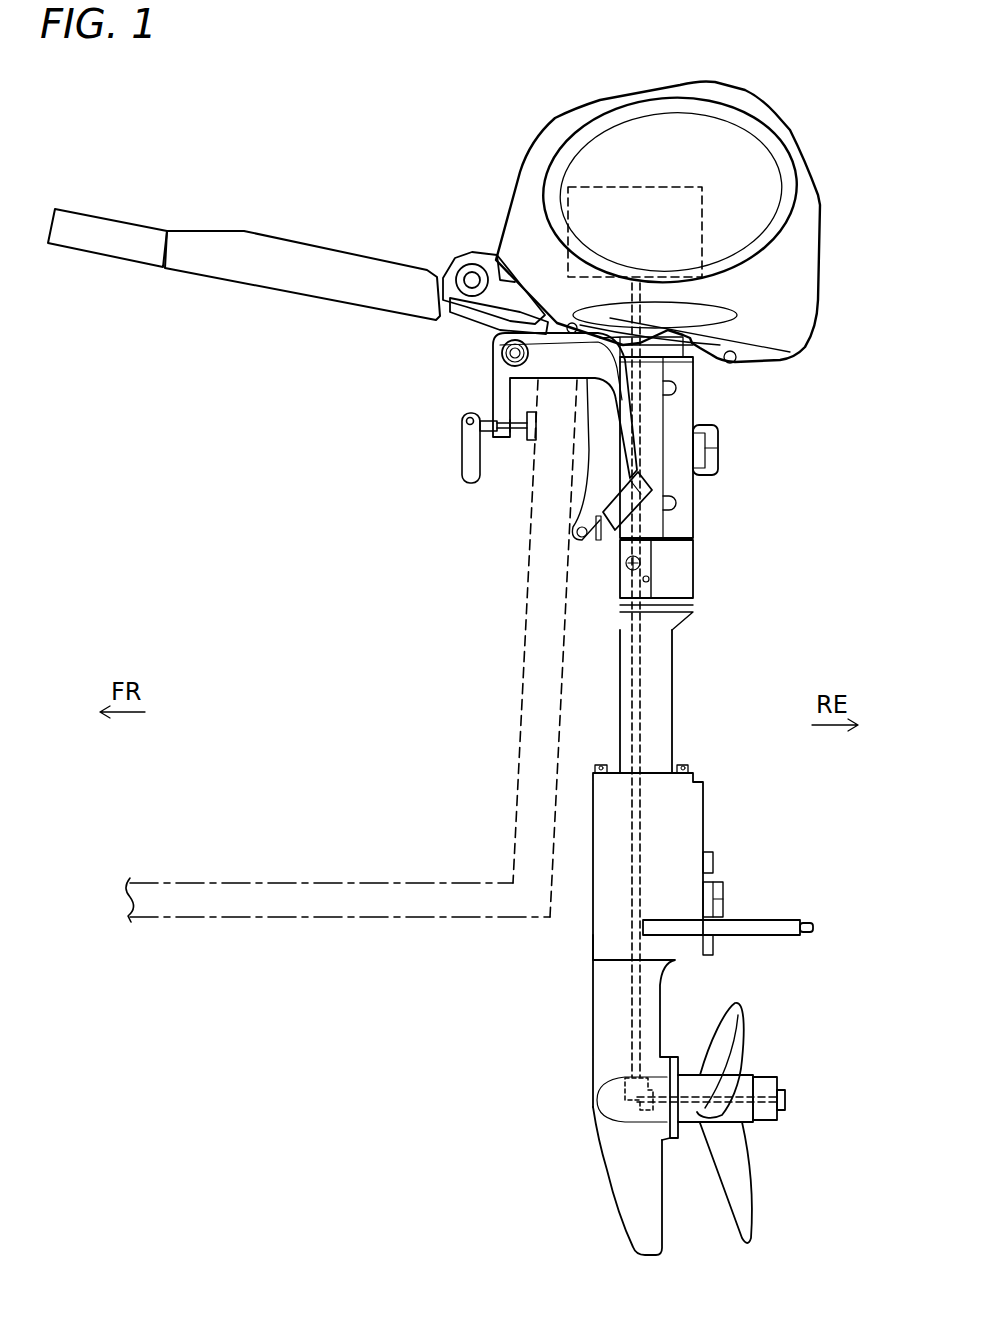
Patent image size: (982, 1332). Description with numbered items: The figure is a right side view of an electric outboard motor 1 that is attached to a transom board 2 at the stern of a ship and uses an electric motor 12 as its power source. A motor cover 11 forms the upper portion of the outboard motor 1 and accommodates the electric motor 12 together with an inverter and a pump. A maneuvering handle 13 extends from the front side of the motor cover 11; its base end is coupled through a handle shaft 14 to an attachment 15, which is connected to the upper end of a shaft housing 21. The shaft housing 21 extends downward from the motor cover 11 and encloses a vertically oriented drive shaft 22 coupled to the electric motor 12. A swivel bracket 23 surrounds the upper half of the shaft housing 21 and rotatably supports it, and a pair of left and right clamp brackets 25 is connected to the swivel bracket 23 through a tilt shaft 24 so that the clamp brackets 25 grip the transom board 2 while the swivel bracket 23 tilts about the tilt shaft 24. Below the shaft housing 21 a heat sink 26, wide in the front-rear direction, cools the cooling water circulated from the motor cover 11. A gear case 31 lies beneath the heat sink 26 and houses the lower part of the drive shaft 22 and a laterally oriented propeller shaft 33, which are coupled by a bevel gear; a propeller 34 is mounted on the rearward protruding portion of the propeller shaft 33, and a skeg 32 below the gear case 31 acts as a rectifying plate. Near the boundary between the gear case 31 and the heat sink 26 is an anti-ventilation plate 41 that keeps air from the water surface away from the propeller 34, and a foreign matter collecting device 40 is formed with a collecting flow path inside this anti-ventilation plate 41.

The outboard motor 1 is at (475, 140).
The transom board 2 is at (528, 577).
The motor cover 11 is at (543, 127).
The electric motor 12 is at (557, 240).
The maneuvering handle 13 is at (265, 240).
The handle shaft 14 is at (468, 274).
The attachment 15 is at (487, 303).
The shaft housing 21 is at (665, 675).
The drive shaft 22 is at (637, 722).
The swivel bracket 23 is at (688, 520).
The tilt shaft 24 is at (505, 354).
The clamp bracket 25 is at (492, 413).
The heat sink 26 is at (695, 810).
The gear case 31 is at (597, 998).
The skeg 32 is at (618, 1173).
The propeller shaft 33 is at (692, 1080).
The propeller 34 is at (743, 1027).
The foreign matter collecting device 40 is at (803, 907).
The anti-ventilation plate 41 is at (790, 922).